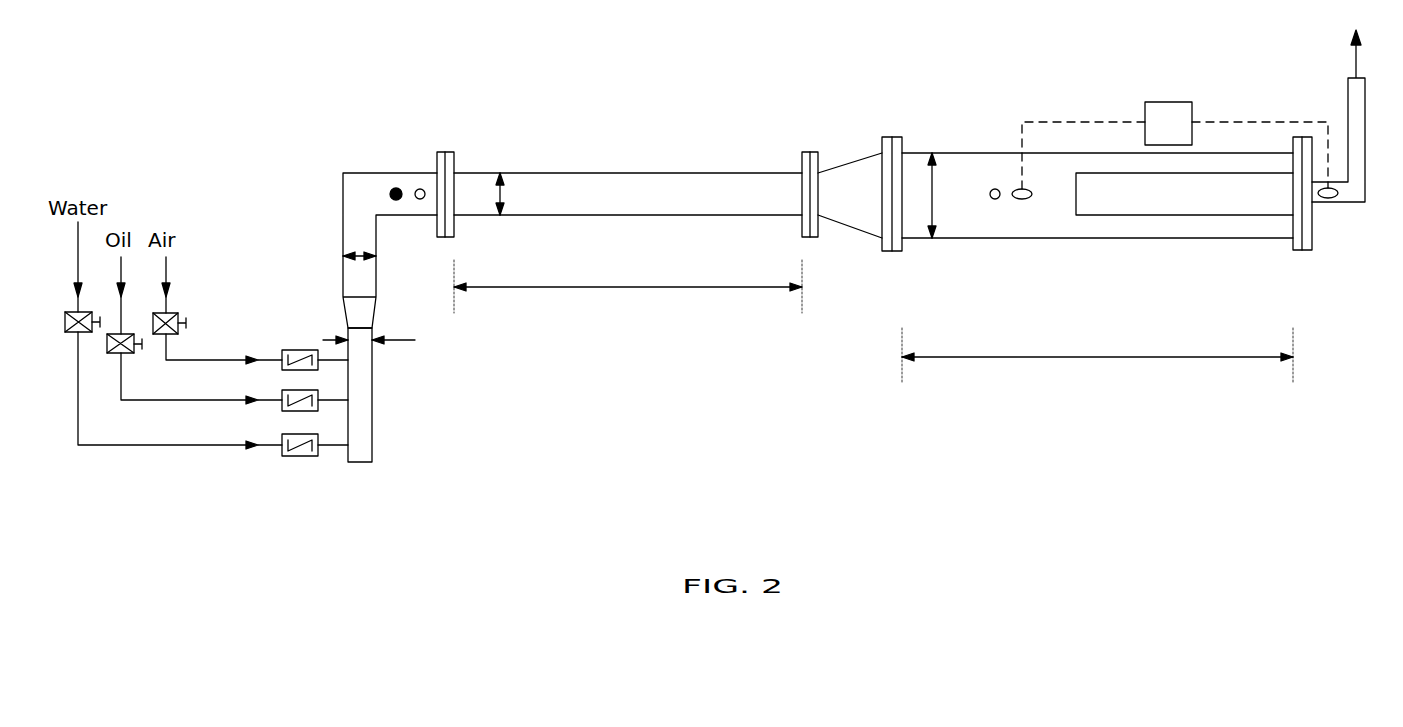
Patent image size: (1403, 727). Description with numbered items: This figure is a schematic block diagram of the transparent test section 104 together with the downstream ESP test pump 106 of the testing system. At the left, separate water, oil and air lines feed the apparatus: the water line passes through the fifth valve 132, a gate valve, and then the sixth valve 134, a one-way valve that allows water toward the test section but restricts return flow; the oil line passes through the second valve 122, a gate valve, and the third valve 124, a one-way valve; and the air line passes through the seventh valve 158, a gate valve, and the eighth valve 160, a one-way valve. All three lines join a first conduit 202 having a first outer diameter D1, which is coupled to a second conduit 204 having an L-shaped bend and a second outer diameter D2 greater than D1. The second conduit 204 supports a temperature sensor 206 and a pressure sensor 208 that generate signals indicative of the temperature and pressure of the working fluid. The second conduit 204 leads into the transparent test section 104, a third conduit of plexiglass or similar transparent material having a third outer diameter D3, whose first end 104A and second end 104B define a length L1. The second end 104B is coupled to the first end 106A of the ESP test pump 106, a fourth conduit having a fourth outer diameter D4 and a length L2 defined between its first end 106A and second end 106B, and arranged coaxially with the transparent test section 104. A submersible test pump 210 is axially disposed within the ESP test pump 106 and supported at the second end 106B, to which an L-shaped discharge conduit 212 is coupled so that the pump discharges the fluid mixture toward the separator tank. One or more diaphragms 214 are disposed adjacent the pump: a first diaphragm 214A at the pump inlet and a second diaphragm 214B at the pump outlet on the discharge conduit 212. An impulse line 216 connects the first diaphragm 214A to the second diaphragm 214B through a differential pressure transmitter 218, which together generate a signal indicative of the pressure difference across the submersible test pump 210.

The fifth valve 132 is at (65, 324).
The second valve 122 is at (108, 345).
The seventh valve 158 is at (178, 312).
The eighth valve 160 is at (300, 350).
The third valve 124 is at (290, 391).
The sixth valve 134 is at (305, 460).
The first conduit 202 is at (372, 382).
The second conduit 204 is at (343, 195).
The pressure sensor 208 is at (393, 188).
The temperature sensor 206 is at (420, 189).
The first end 104A is at (460, 132).
The transparent test section 104 is at (645, 173).
The second end 104B is at (803, 127).
The first end 106A is at (885, 115).
The ESP test pump 106 is at (955, 153).
The second end 106B is at (1290, 262).
The submersible test pump 210 is at (1128, 200).
The discharge conduit 212 is at (1348, 82).
The diaphragms 214 is at (1187, 245).
The first diaphragm 214A is at (1018, 200).
The second diaphragm 214B is at (1332, 199).
The impulse line 216 is at (1085, 122).
The differential pressure transmitter 218 is at (1168, 102).
The first outer diameter D1 is at (415, 340).
The second outer diameter D2 is at (368, 256).
The third outer diameter D3 is at (505, 196).
The fourth outer diameter D4 is at (927, 196).
The length L1 is at (628, 290).
The length L2 is at (1098, 360).